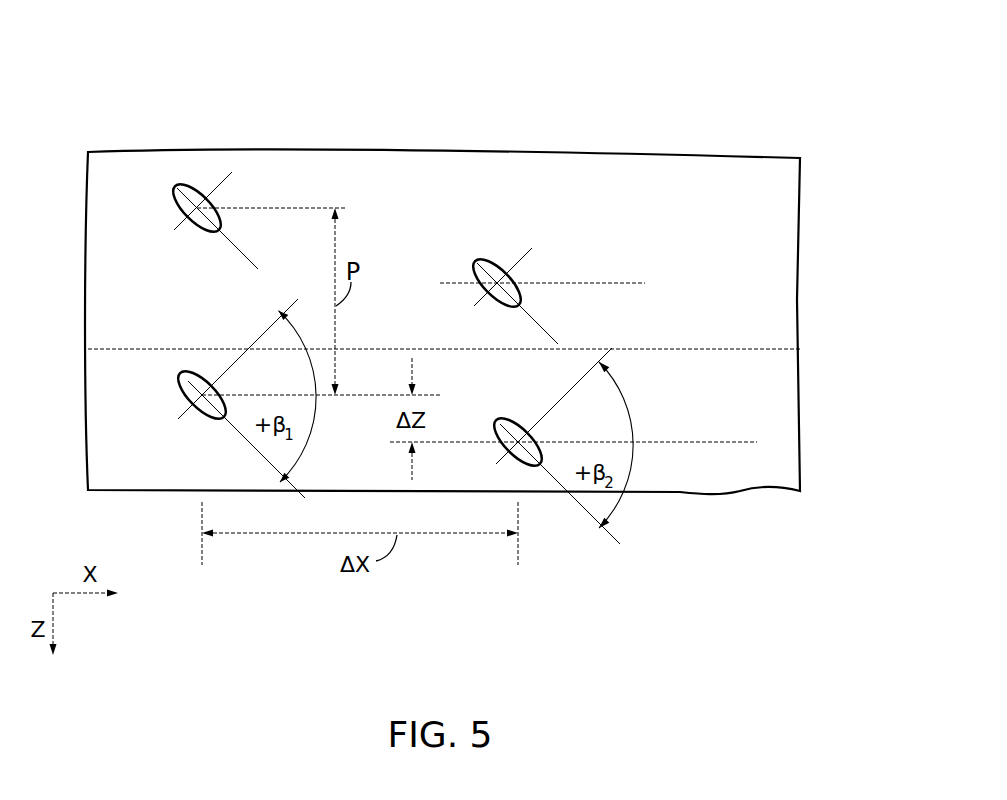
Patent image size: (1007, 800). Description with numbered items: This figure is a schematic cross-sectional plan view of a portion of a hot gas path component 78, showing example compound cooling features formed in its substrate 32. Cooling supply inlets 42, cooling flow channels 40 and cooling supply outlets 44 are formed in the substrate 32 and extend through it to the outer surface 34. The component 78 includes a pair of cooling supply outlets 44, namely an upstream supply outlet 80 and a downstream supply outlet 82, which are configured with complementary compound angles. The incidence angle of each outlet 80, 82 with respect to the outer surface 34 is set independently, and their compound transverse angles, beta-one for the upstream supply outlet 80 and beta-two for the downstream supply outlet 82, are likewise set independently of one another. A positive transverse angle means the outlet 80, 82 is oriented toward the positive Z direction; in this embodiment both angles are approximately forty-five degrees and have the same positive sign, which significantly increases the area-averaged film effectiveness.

The substrate 32 is at (799, 192).
The outer surface 34 is at (703, 411).
The cooling flow channel 40 is at (511, 325).
The cooling supply inlet 42 is at (512, 296).
The cooling supply outlet 44 is at (211, 254).
The hot gas path component 78 is at (737, 55).
The upstream supply outlet 80 is at (198, 233).
The downstream supply outlet 82 is at (498, 429).